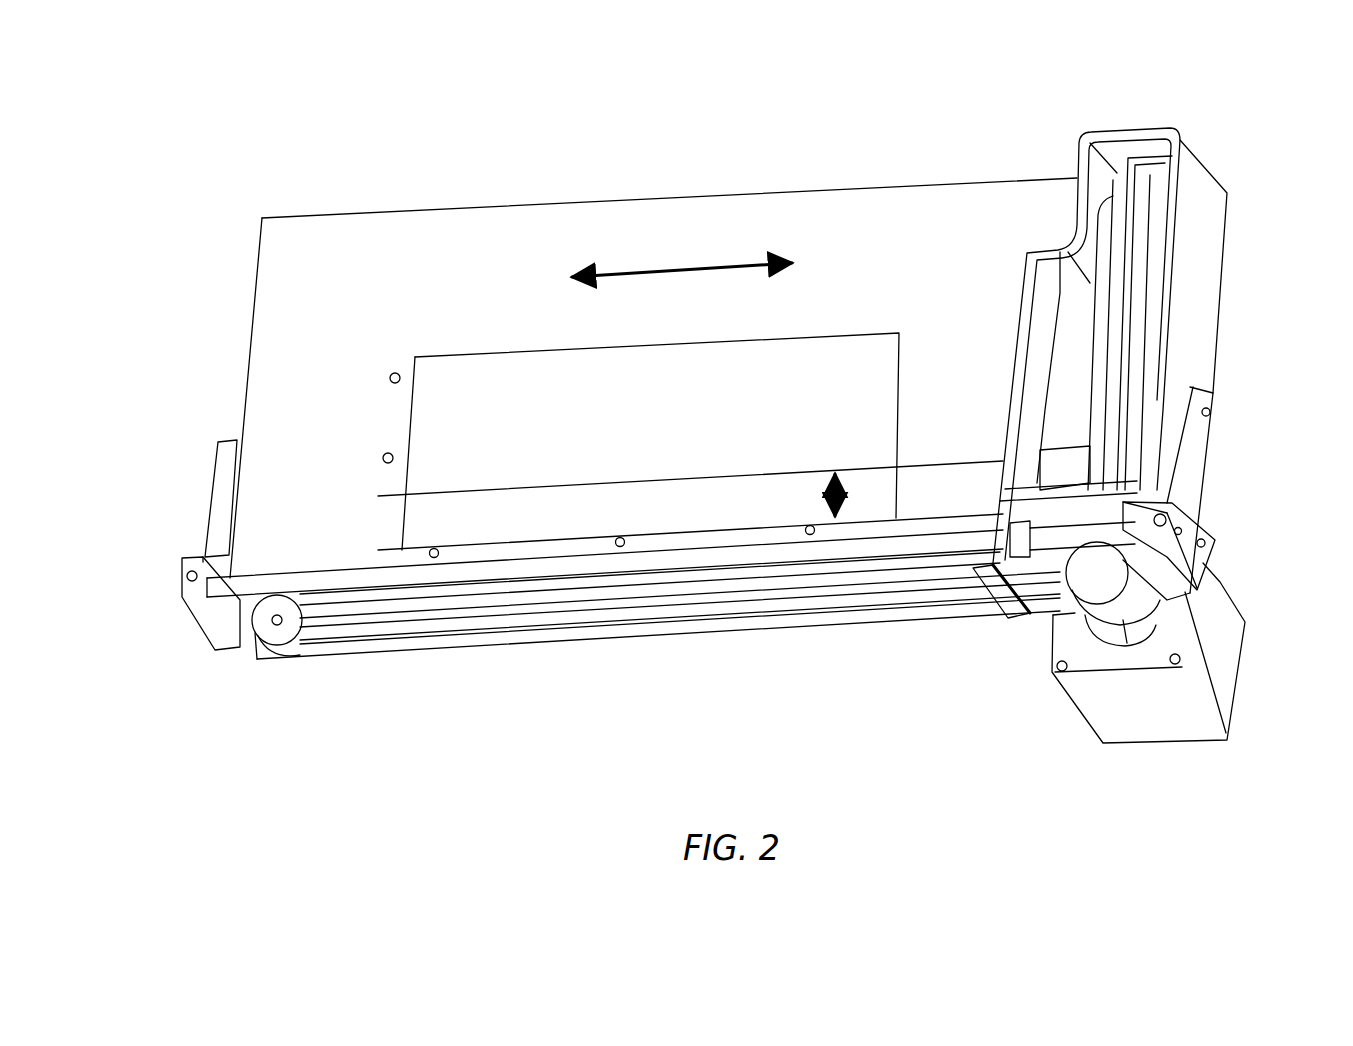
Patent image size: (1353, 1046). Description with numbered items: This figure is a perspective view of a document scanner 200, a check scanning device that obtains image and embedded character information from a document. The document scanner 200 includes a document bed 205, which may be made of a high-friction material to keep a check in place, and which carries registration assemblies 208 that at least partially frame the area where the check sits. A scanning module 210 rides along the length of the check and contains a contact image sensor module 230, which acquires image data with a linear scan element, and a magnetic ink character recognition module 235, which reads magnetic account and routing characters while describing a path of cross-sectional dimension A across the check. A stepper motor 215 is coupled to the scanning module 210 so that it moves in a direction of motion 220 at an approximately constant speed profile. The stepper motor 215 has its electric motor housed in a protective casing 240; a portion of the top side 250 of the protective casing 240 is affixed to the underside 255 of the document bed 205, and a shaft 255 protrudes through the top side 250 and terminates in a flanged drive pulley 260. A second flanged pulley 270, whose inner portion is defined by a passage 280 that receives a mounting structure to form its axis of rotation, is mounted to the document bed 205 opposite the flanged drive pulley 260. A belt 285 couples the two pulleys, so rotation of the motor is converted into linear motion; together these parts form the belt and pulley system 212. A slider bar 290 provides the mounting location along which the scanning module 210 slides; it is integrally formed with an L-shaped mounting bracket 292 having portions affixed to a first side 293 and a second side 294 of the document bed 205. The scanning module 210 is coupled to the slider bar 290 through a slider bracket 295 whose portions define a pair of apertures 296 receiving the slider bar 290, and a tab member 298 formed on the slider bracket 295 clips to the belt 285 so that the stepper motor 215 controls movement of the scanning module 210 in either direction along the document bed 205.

The document scanner 200 is at (636, 175).
The document bed 205 is at (317, 235).
The first side 293 is at (258, 265).
The direction of motion 220 is at (682, 258).
The underside 255 is at (531, 367).
The registration assemblies 208 is at (392, 374).
The cross-sectional dimension A is at (828, 497).
The pair of apertures 296 is at (1012, 478).
The contact image sensor (CIS) module 230 is at (1155, 258).
The second side 294 is at (1218, 220).
The scanning module 210 is at (1172, 297).
The L-shaped mounting bracket 292 is at (1205, 462).
The magnetic ink character recognition (MICR) module 235 is at (1068, 462).
The slider bracket 295 is at (1003, 547).
The slider bar 290 is at (343, 575).
The belt 285 is at (345, 640).
The passage 280 is at (276, 622).
The second flanged pulley 270 is at (258, 632).
The belt and pulley system 212 is at (545, 655).
The tab member 298 is at (1000, 595).
The top side 250 is at (1067, 640).
The flanged drive pulley 260 is at (1103, 570).
The protective casing 240 is at (1215, 675).
The stepper motor 215 is at (1102, 703).